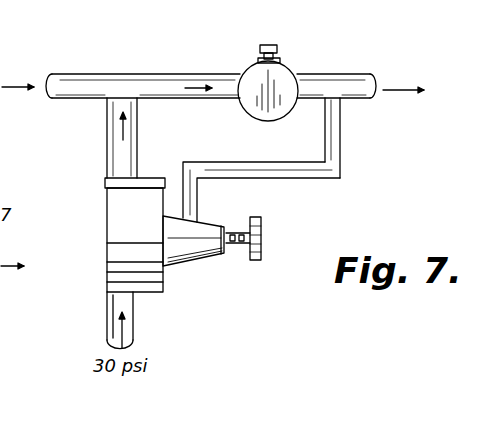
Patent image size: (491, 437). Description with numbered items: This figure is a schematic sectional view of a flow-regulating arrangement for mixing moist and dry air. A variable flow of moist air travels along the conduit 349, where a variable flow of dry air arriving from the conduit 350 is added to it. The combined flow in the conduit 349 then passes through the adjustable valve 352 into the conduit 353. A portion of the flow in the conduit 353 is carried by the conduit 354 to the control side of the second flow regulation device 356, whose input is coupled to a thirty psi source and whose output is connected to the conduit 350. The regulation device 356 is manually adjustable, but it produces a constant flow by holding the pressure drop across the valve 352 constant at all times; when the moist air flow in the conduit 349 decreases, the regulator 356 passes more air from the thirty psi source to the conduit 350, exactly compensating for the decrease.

The conduit 349 is at (130, 74).
The conduit 350 is at (107, 158).
The adjustable valve 352 is at (299, 68).
The conduit 353 is at (358, 74).
The conduit 354 is at (288, 146).
The second flow regulation device 356 is at (196, 252).